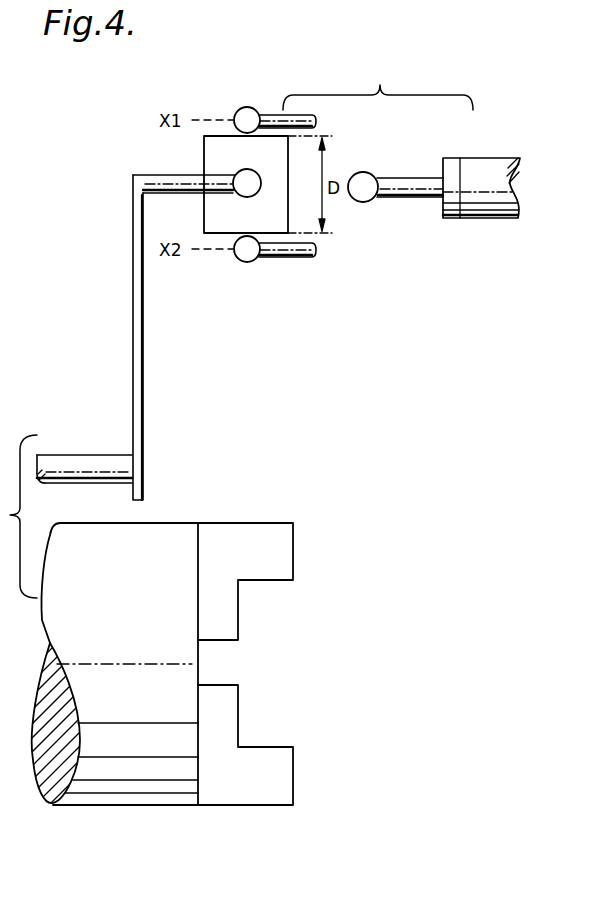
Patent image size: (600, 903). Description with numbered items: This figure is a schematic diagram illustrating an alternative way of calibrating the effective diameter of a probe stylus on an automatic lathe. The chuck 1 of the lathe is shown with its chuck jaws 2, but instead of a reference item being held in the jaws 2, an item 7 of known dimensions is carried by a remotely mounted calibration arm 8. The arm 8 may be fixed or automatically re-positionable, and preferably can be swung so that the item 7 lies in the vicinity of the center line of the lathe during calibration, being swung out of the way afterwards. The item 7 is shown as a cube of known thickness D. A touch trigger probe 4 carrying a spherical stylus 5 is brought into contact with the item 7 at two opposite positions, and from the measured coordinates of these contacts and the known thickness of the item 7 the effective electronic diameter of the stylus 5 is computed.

The chuck 1 is at (145, 770).
The chuck jaws 2 is at (237, 780).
The touch trigger probe 4 is at (418, 199).
The spherical stylus 5 is at (247, 116).
The item of known dimensions 7 is at (208, 162).
The calibration arm 8 is at (133, 345).